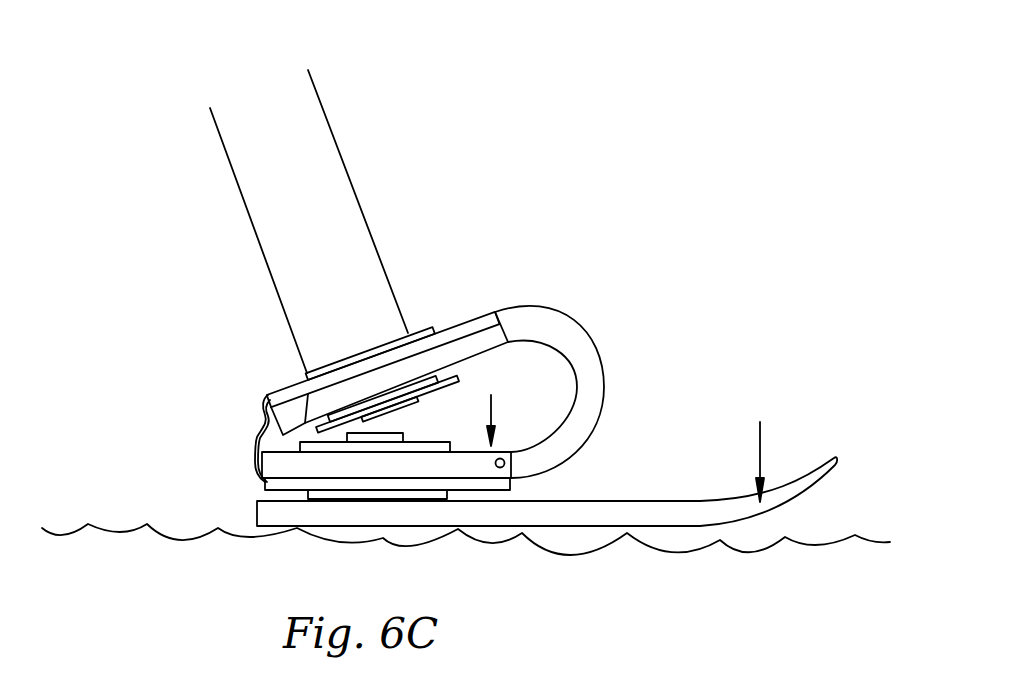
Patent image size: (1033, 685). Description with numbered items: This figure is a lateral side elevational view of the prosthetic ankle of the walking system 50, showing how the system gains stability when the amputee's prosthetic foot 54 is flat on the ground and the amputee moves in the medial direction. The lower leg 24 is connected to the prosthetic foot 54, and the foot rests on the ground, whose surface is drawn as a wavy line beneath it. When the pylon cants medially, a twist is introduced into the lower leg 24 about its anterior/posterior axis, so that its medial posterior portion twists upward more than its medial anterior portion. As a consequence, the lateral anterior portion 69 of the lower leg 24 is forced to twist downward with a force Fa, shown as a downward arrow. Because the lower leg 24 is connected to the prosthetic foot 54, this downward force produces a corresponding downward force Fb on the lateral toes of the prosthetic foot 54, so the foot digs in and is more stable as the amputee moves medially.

The walking system 50 is at (471, 331).
The lower leg 24 is at (325, 466).
The lateral anterior portion 69 is at (505, 463).
The prosthetic foot 54 is at (571, 556).